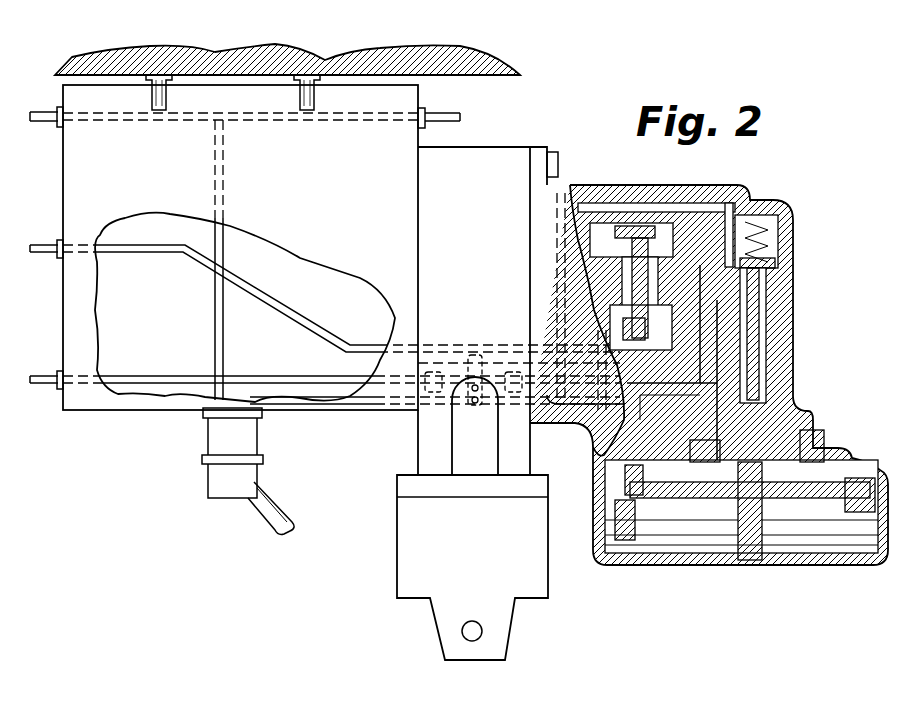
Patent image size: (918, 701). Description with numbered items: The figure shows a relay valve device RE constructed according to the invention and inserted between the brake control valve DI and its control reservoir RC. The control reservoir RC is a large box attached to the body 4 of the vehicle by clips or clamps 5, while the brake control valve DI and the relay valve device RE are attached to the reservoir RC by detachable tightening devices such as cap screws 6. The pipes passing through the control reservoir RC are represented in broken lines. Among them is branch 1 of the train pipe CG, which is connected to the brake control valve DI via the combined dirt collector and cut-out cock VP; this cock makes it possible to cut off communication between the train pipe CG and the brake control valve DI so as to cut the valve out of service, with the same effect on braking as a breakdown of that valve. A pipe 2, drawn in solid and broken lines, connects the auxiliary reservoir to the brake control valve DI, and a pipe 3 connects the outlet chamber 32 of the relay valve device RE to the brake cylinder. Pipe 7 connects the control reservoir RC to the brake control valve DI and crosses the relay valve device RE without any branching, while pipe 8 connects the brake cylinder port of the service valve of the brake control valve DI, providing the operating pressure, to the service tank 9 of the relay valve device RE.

The branch of the train pipe 1 is at (218, 160).
The pipe 2 is at (57, 246).
The pipe 3 is at (55, 376).
The body of the vehicle 4 is at (332, 62).
The clips or clamps 5 is at (166, 97).
The cap screws 6 is at (558, 158).
The pipe 7 is at (460, 364).
The pipe 8 is at (682, 385).
The service tank 9 is at (520, 372).
The outlet chamber 32 is at (428, 372).
The train pipe CG is at (443, 108).
The control reservoir RC is at (130, 424).
The combined dirt collector and cut-out cock VP is at (199, 493).
The relay valve device RE is at (389, 585).
The brake control valve DI is at (820, 568).